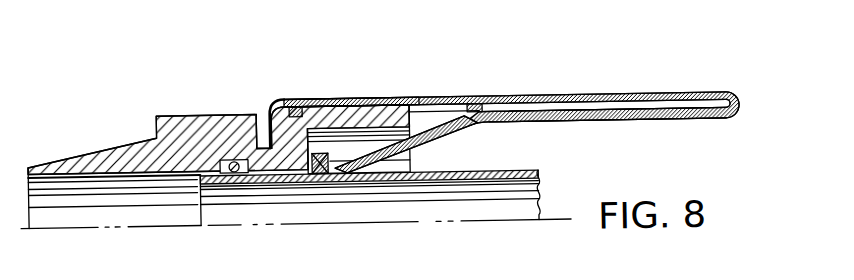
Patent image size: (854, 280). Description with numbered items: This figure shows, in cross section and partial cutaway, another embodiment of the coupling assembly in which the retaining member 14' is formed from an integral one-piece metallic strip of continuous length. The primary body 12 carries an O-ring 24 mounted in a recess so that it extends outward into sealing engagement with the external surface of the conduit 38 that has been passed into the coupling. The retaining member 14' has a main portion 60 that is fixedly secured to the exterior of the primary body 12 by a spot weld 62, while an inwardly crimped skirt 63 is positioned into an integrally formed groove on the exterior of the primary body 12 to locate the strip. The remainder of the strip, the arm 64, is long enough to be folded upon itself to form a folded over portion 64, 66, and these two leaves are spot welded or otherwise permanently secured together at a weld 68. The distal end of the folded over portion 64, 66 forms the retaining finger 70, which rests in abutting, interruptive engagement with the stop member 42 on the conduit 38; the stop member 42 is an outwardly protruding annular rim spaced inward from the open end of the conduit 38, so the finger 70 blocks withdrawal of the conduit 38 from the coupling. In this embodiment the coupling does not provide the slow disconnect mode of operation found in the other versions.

The primary body 12 is at (112, 132).
The retaining member 14' is at (505, 136).
The O-ring 24 is at (234, 158).
The conduit 38 is at (518, 173).
The stop member 42 is at (336, 128).
The main portion 60 is at (348, 98).
The spot weld 62 is at (270, 108).
The inwardly crimped skirt 63 is at (258, 125).
The arm 64 is at (610, 97).
The folded over portion 66 is at (297, 107).
The spot weld 68 is at (483, 100).
The retaining finger 70 is at (386, 152).